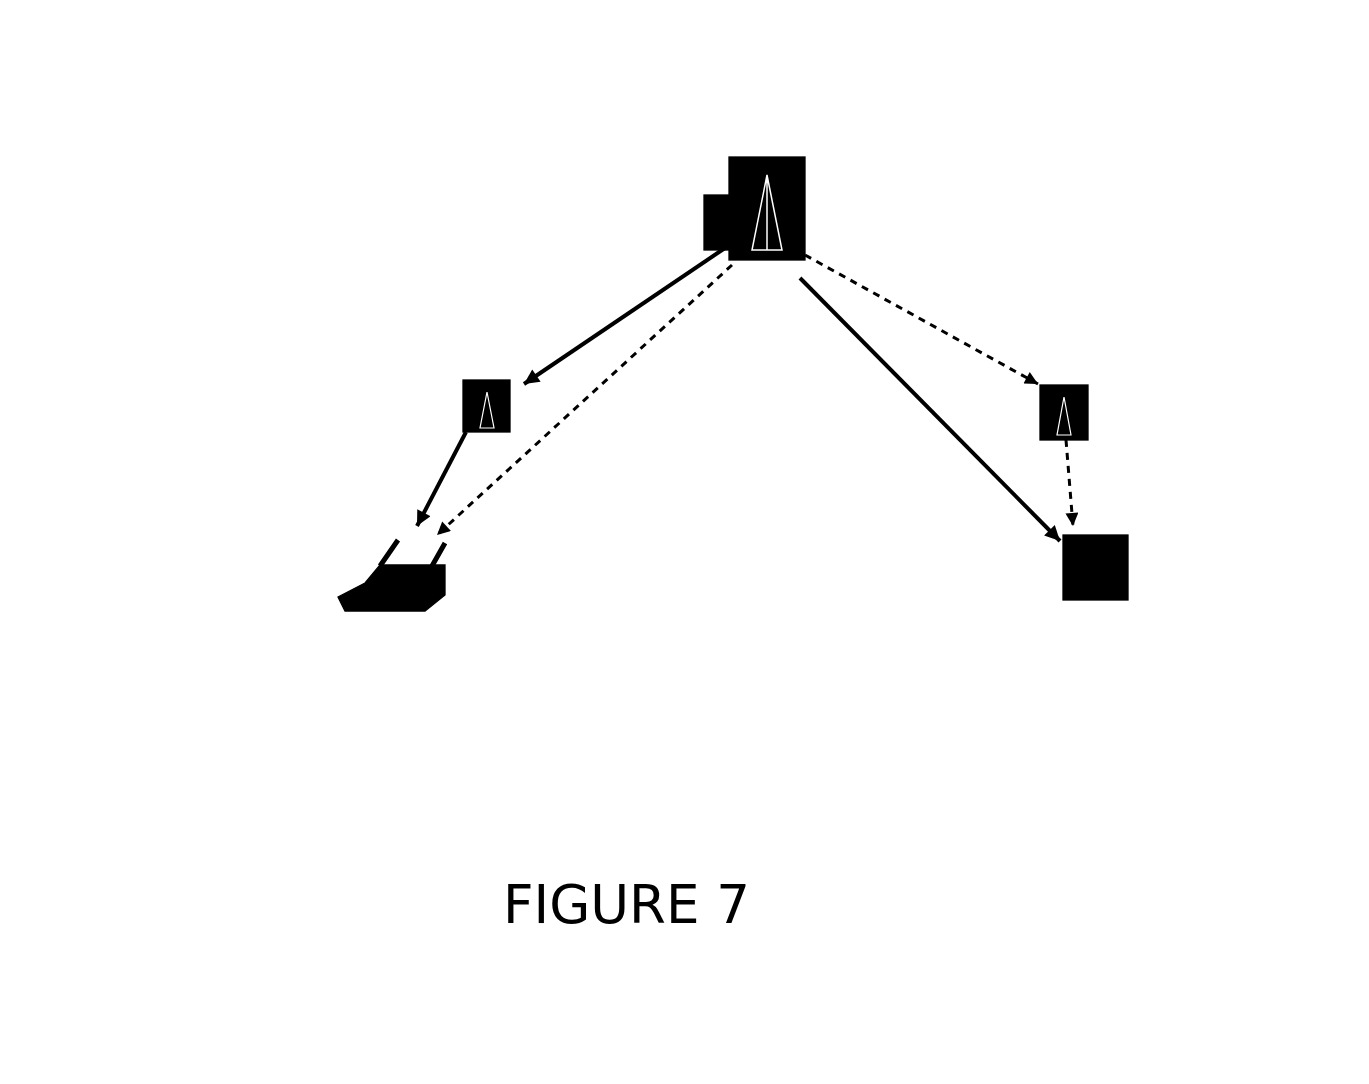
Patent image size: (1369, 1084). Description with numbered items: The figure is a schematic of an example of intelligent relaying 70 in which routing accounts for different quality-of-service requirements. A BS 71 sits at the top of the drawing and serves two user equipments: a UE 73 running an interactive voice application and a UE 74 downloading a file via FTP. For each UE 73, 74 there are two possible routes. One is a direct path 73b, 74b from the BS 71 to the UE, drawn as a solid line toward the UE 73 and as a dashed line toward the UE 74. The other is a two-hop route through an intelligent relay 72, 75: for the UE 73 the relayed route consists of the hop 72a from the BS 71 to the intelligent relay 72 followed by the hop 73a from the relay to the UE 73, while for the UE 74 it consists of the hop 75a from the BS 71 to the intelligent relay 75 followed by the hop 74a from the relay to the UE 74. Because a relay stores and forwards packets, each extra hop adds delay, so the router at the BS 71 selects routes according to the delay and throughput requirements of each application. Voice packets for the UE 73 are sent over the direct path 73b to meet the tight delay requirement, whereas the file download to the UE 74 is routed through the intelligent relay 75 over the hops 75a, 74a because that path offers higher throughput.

The intelligent relaying 70 is at (190, 184).
The BS 71 is at (762, 150).
The intelligent relay 72 is at (1067, 380).
The path 72a is at (916, 310).
The UE 73 is at (1135, 567).
The path 73a is at (1080, 475).
The direct path 73b is at (903, 400).
The UE 74 is at (424, 610).
The path 74a is at (443, 468).
The direct path 74b is at (534, 456).
The intelligent relay 75 is at (485, 370).
The path 75a is at (605, 312).